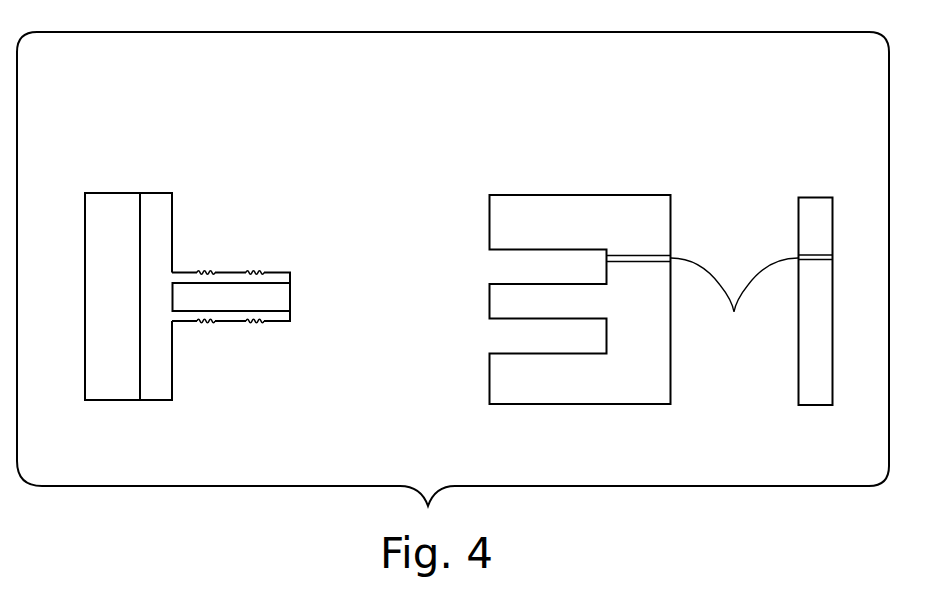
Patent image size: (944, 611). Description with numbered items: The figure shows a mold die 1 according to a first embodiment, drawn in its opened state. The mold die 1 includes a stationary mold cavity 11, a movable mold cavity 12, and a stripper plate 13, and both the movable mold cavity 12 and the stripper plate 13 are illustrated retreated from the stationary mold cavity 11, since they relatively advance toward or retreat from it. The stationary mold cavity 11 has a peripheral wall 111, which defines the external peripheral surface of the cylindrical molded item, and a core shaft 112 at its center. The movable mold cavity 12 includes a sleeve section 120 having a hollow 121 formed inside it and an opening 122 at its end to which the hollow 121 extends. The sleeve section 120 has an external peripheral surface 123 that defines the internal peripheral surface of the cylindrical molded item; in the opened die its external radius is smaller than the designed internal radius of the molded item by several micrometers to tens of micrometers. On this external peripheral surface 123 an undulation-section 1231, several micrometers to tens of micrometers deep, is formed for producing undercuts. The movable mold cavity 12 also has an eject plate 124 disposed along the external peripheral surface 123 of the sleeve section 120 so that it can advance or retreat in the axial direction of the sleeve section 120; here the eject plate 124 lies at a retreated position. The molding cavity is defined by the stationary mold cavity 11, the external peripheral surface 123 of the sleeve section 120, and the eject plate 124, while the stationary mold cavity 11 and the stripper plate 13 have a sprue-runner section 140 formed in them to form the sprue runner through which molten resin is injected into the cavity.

The mold die 1 is at (838, 138).
The stationary mold cavity 11 is at (627, 192).
The peripheral wall 111 is at (505, 252).
The core shaft 112 is at (497, 302).
The movable mold cavity 12 is at (120, 191).
The sleeve section 120 is at (229, 270).
The hollow 121 is at (276, 284).
The opening 122 is at (291, 299).
The external peripheral surface 123 is at (275, 322).
The undulation-section 1231 is at (258, 272).
The eject plate 124 is at (163, 207).
The stripper plate 13 is at (835, 197).
The sprue-runner section 140 is at (734, 301).